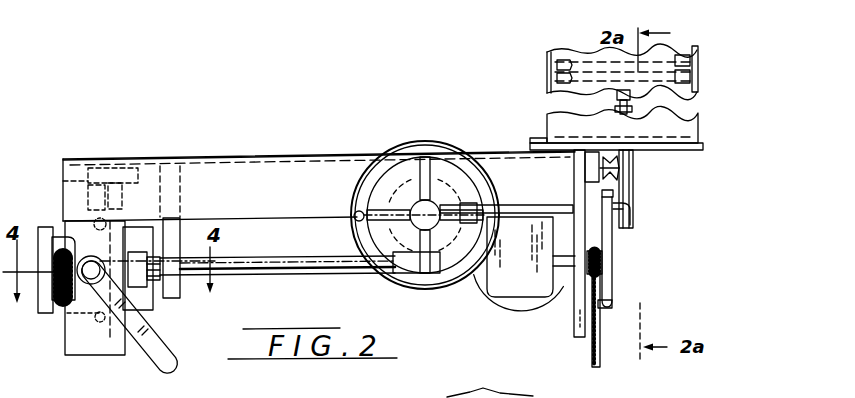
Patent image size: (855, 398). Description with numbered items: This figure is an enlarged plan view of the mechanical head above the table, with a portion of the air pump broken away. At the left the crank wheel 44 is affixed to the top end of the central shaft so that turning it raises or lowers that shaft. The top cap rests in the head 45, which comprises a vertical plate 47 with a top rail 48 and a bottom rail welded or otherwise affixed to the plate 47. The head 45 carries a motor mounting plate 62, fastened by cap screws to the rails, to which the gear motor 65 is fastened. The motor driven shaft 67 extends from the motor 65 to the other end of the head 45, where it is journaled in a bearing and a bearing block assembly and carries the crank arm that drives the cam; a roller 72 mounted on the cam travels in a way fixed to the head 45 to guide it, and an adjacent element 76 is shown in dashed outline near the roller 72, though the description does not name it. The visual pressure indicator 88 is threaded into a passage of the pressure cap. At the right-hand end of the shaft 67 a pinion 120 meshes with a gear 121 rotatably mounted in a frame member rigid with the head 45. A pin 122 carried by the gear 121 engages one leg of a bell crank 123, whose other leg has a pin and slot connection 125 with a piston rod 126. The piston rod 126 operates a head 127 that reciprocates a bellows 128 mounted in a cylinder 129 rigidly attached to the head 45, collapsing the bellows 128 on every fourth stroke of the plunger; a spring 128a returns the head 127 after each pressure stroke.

The crank wheel 44 is at (412, 147).
The head 45 is at (576, 312).
The vertical plate 47 is at (249, 165).
The top rail 48 is at (298, 178).
The motor mounting plate 62 is at (524, 204).
The gear motor 65 is at (493, 284).
The motor driven shaft 67 is at (279, 265).
The roller 72 is at (110, 170).
The block 76 is at (96, 168).
The visual pressure indicator 88 is at (62, 248).
The pinion 120 is at (601, 250).
The gear 121 is at (591, 352).
The pin 122 is at (611, 305).
The bell crank 123 is at (603, 266).
The pin and slot connection 125 is at (613, 208).
The piston rod 126 is at (633, 171).
The head 127 is at (701, 82).
The bellows 128 is at (552, 70).
The spring 128a is at (548, 60).
The cylinder 129 is at (548, 88).